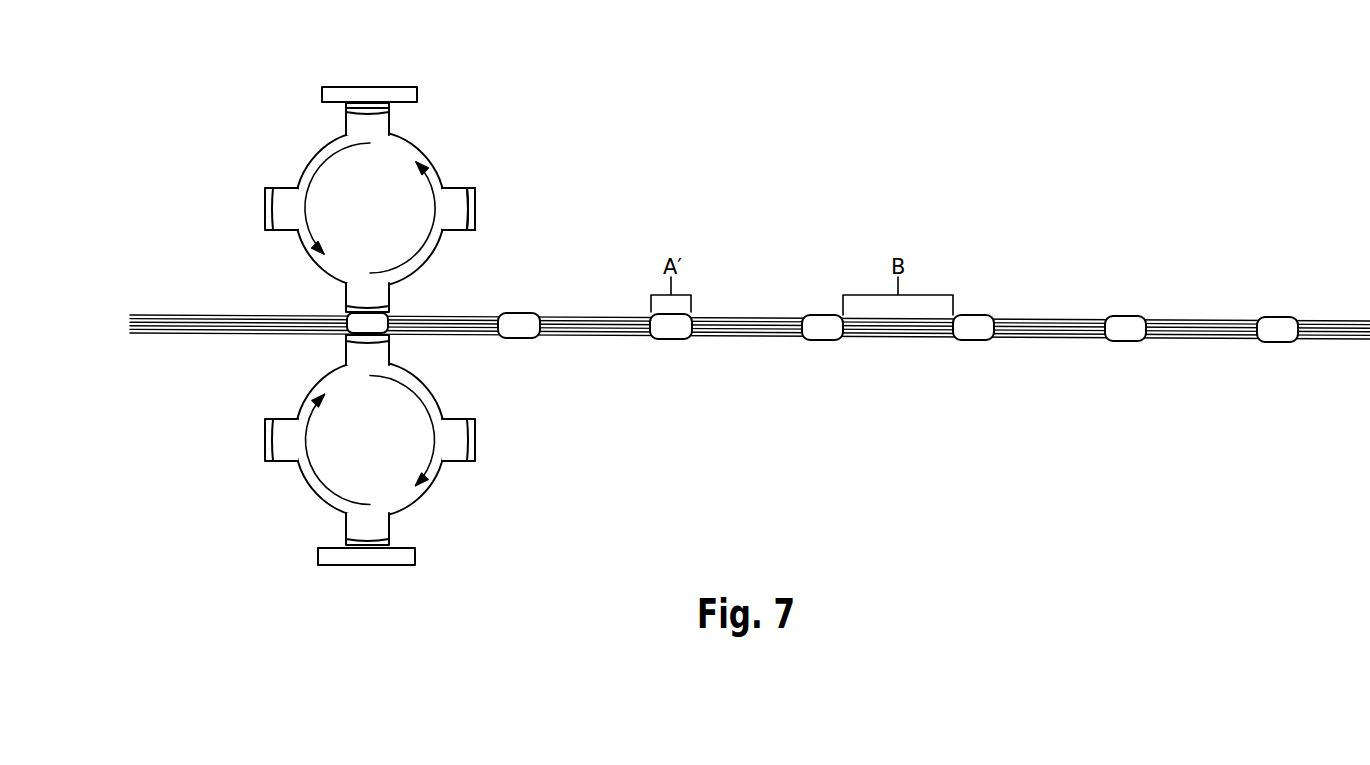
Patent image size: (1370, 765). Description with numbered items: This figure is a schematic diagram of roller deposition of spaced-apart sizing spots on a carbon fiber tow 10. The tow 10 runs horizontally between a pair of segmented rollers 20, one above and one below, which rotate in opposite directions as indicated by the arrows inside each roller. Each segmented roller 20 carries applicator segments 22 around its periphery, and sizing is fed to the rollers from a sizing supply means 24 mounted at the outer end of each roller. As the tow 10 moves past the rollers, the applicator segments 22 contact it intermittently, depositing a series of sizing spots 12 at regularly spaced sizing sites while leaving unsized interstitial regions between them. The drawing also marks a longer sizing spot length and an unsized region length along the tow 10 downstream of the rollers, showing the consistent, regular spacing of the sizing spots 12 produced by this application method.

The carbon fiber tow 10 is at (160, 322).
The sizing spots 12 is at (822, 342).
The segmented rollers 20 is at (427, 158).
The applicator segments 22 is at (477, 208).
The sizing supply means 24 is at (373, 86).